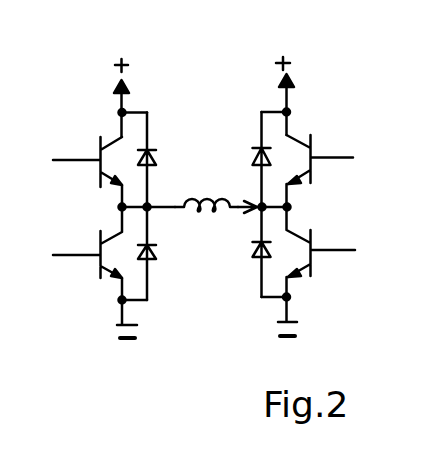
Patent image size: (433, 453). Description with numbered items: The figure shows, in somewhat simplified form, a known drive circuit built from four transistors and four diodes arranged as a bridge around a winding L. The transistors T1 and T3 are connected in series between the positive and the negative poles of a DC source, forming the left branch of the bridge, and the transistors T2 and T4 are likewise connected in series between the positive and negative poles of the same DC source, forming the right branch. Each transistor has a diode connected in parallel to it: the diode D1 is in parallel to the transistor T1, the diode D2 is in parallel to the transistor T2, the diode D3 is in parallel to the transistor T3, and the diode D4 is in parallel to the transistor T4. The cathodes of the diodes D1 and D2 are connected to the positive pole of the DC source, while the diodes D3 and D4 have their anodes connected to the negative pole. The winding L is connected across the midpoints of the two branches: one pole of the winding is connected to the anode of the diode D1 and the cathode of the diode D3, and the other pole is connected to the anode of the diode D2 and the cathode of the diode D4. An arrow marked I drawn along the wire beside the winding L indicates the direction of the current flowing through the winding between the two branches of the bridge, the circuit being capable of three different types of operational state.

The transistor T1 is at (87, 157).
The transistor T2 is at (329, 157).
The transistor T3 is at (87, 256).
The transistor T4 is at (328, 252).
The diode D1 is at (155, 160).
The diode D2 is at (250, 158).
The diode D3 is at (155, 248).
The diode D4 is at (255, 248).
The winding L is at (206, 193).
The load current I is at (262, 193).